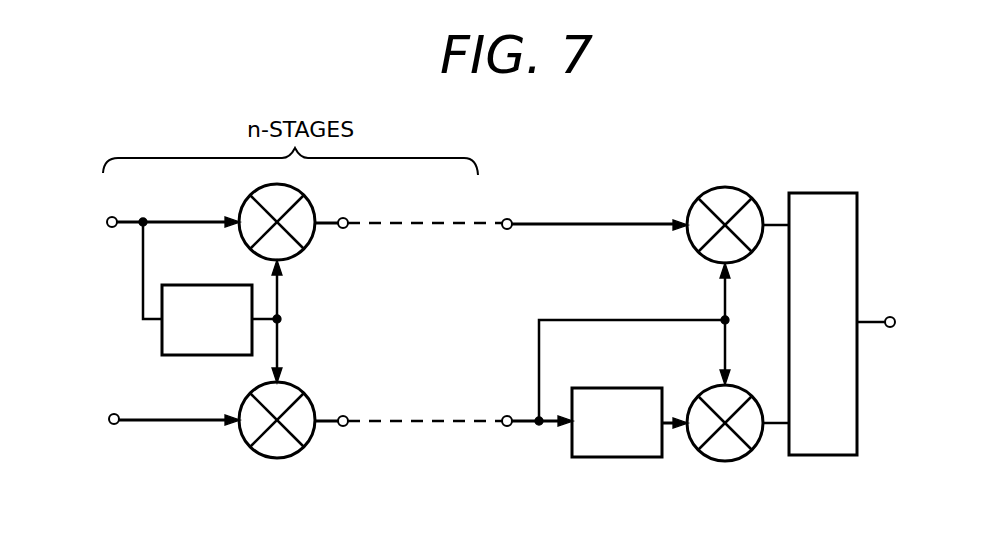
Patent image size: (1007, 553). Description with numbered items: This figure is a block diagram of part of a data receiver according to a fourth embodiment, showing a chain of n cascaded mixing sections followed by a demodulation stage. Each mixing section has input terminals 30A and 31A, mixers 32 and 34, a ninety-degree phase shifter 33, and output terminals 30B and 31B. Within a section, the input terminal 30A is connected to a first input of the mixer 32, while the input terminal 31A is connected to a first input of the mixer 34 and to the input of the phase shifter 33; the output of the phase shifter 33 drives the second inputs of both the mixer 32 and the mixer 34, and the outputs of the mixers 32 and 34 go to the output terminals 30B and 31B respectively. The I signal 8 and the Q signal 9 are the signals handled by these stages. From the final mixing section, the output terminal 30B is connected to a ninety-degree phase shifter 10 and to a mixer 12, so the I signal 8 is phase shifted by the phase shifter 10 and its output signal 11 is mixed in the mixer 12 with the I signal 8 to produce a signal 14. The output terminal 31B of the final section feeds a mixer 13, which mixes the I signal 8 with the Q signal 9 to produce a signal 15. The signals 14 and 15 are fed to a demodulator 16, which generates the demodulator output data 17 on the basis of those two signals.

The mixing section input terminal 31A is at (108, 216).
The Q signal 9 is at (128, 226).
The mixer 34 is at (306, 250).
The mixing section output terminal 31B is at (343, 216).
The 90-degree phase shifter 33 is at (175, 357).
The mixing section input terminal 30A is at (106, 416).
The I signal 8 is at (147, 425).
The mixer 32 is at (268, 458).
The mixing section output terminal 30B is at (343, 414).
The 90-degree phase shifter 10 is at (585, 458).
The output signal of the phase shifter 11 is at (677, 412).
The mixer 12 is at (720, 462).
The mixer 13 is at (742, 188).
The signal to be exposed to demodulation 14 is at (777, 420).
The signal to be exposed to demodulation 15 is at (775, 229).
The demodulator 16 is at (858, 445).
The demodulator output data 17 is at (888, 330).